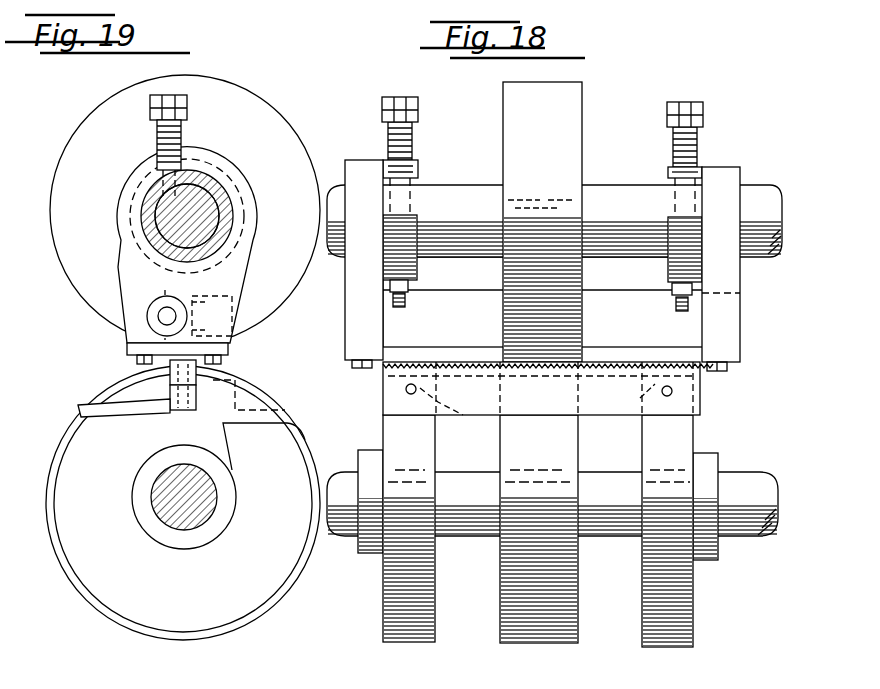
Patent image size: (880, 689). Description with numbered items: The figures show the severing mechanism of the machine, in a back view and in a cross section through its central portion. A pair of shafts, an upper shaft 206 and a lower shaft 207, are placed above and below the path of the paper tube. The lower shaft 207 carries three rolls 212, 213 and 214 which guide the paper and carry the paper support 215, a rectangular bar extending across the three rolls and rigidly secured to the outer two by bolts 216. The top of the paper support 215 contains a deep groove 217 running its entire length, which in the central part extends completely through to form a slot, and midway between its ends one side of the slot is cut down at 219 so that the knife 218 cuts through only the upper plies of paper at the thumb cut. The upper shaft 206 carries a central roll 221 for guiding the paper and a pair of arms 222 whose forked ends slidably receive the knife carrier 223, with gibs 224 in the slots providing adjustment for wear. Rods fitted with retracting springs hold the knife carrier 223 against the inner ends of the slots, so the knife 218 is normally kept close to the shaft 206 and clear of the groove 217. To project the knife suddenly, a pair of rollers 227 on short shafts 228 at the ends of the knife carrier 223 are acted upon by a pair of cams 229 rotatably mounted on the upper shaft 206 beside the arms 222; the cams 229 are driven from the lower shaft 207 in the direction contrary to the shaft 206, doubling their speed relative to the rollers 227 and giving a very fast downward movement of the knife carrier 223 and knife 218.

In FIG. 19, the upper shaft 206 is at (220, 233).
In FIG. 18, the upper shaft 206 is at (753, 208).
In FIG. 19, the lower shaft 207 is at (197, 523).
In FIG. 18, the lower shaft 207 is at (738, 495).
In FIG. 19, the roll 212 is at (119, 617).
In FIG. 18, the roll 212 is at (418, 620).
In FIG. 18, the roll 213 is at (540, 625).
In FIG. 18, the roll 214 is at (678, 630).
In FIG. 19, the paper support 215 is at (177, 401).
In FIG. 18, the paper support 215 is at (687, 412).
In FIG. 18, the bolt 216 is at (673, 392).
In FIG. 19, the groove 217 is at (180, 381).
In FIG. 18, the groove 217 is at (458, 415).
In FIG. 19, the knife 218 is at (180, 371).
In FIG. 18, the cut-down portion 219 is at (557, 375).
In FIG. 19, the central roll 221 is at (280, 132).
In FIG. 18, the central roll 221 is at (567, 140).
In FIG. 19, the arm 222 is at (134, 328).
In FIG. 18, the knife carrier 223 is at (682, 331).
In FIG. 19, the gib 224 is at (195, 318).
In FIG. 19, the roller 227 is at (150, 306).
In FIG. 19, the short shaft 228 is at (158, 318).
In FIG. 19, the cam 229 is at (122, 190).